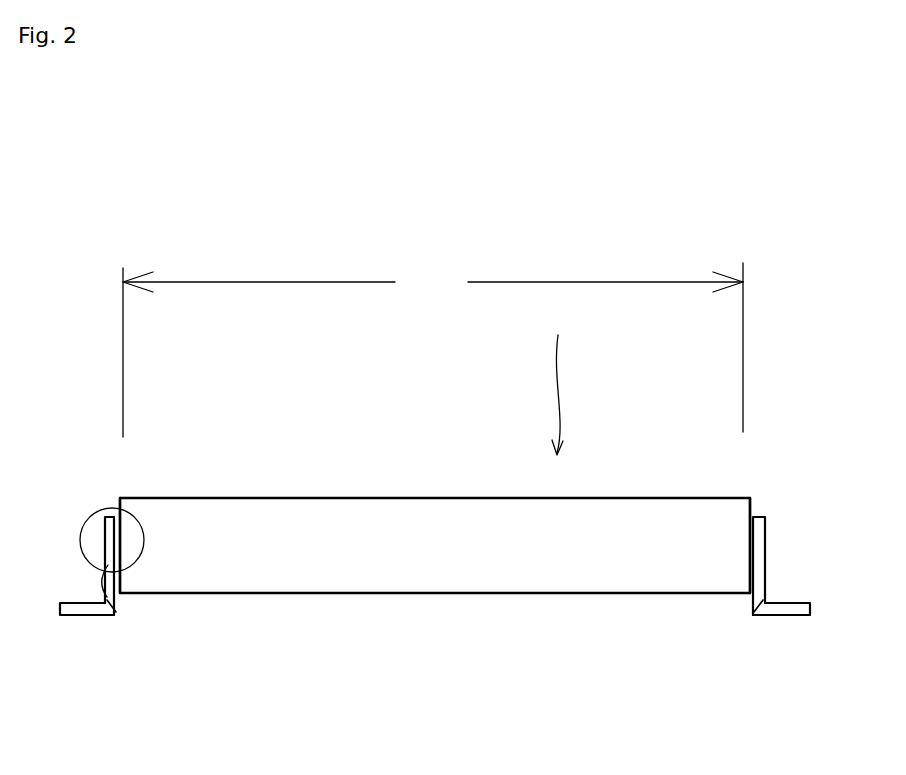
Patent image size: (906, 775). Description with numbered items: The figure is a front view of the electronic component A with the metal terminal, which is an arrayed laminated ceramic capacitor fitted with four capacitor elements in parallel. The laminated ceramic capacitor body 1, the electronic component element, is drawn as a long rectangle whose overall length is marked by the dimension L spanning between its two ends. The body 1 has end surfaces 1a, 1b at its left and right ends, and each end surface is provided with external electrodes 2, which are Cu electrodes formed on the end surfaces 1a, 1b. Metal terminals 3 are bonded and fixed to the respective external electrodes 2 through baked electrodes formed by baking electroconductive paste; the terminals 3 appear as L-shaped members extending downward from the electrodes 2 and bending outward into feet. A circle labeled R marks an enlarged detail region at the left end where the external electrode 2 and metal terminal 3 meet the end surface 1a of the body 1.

The laminated ceramic capacitor body 1 is at (399, 497).
The end surface 1a is at (114, 503).
The end surface 1b is at (752, 503).
The external electrode 2 is at (116, 610).
The metal terminal 3 is at (77, 616).
The enlarged region R is at (103, 507).
The roll length L is at (433, 350).
The electronic component with metal terminal A is at (556, 381).